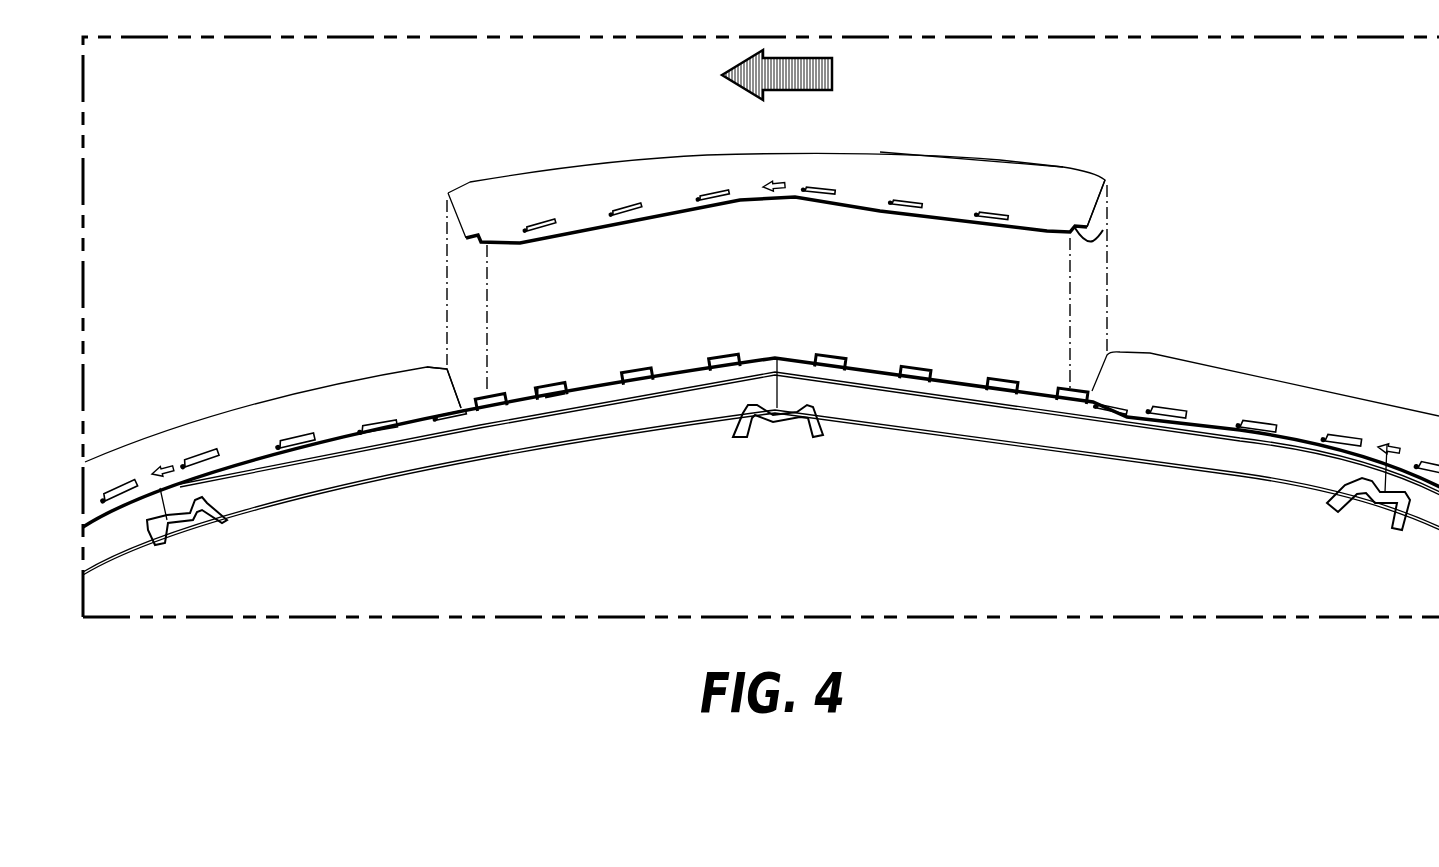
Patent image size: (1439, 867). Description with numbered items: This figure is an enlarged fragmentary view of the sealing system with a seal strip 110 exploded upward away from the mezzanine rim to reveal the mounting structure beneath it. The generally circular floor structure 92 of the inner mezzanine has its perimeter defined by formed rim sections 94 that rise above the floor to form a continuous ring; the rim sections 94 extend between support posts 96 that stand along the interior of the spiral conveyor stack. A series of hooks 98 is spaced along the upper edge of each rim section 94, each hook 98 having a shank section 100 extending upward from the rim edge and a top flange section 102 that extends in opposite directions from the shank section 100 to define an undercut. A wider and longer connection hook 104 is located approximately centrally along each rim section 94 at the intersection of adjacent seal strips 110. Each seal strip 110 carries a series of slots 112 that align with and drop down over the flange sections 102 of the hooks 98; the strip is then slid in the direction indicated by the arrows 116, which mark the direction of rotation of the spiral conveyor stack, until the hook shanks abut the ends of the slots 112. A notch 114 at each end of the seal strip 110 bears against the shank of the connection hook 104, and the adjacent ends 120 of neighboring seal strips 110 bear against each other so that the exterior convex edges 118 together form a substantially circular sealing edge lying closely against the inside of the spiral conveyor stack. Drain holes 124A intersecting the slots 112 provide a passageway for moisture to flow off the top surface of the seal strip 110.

The floor structure 92 is at (1212, 514).
The rim sections 94 is at (310, 473).
The support posts 96 is at (193, 517).
The hooks 98 is at (555, 392).
The shank section 100 is at (548, 402).
The flange section 102 is at (537, 398).
The connection hook 104 is at (450, 400).
The seal strip 110 is at (547, 200).
The slots 112 is at (635, 203).
The notch 114 is at (1103, 237).
The arrows 116 is at (778, 182).
The exterior convex edge 118 is at (1038, 165).
The adjacent ends 120 is at (1100, 205).
The first molding segment 124A is at (278, 452).